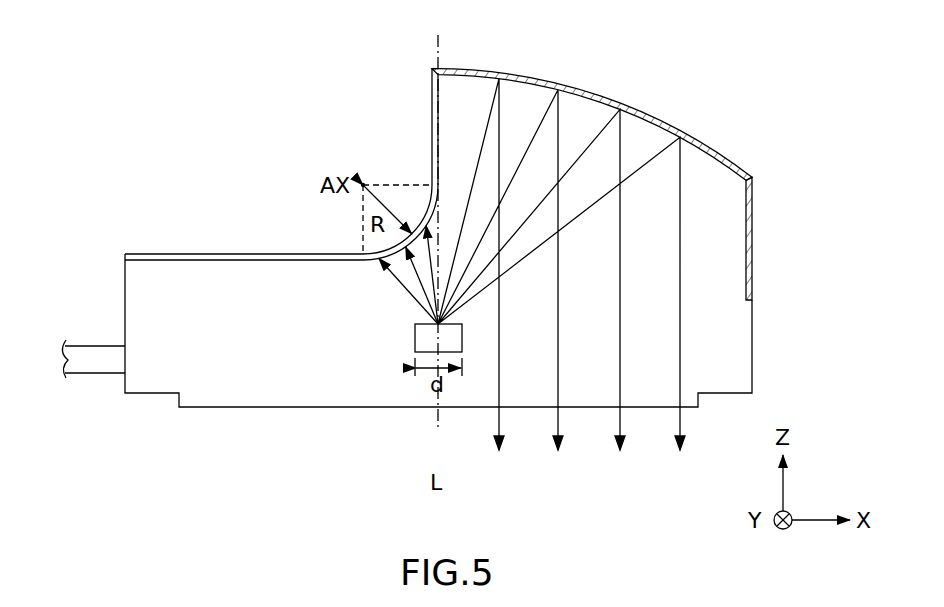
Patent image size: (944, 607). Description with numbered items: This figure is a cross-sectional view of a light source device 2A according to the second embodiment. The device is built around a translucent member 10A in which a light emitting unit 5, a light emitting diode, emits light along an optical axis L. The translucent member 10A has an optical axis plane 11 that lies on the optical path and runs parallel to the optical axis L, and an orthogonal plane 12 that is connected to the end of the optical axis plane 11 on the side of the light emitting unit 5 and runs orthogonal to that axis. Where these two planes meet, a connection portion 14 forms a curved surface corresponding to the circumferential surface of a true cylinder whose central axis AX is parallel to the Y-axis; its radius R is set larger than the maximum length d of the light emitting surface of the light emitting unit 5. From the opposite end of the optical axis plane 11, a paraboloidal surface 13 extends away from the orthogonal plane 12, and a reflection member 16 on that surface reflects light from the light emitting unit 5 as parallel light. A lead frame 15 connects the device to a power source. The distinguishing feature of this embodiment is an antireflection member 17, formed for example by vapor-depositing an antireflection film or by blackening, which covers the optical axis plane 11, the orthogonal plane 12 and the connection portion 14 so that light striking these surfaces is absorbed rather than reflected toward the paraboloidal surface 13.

The light source device 2A is at (442, 152).
The light emitting unit 5 is at (415, 338).
The translucent member 10A is at (232, 400).
The optical axis plane 11 is at (432, 110).
The orthogonal plane 12 is at (160, 254).
The paraboloidal surface 13 is at (720, 150).
The connection portion 14 is at (420, 218).
The lead frame 15 is at (92, 365).
The reflection member 16 is at (530, 74).
The antireflection member 17 is at (432, 75).